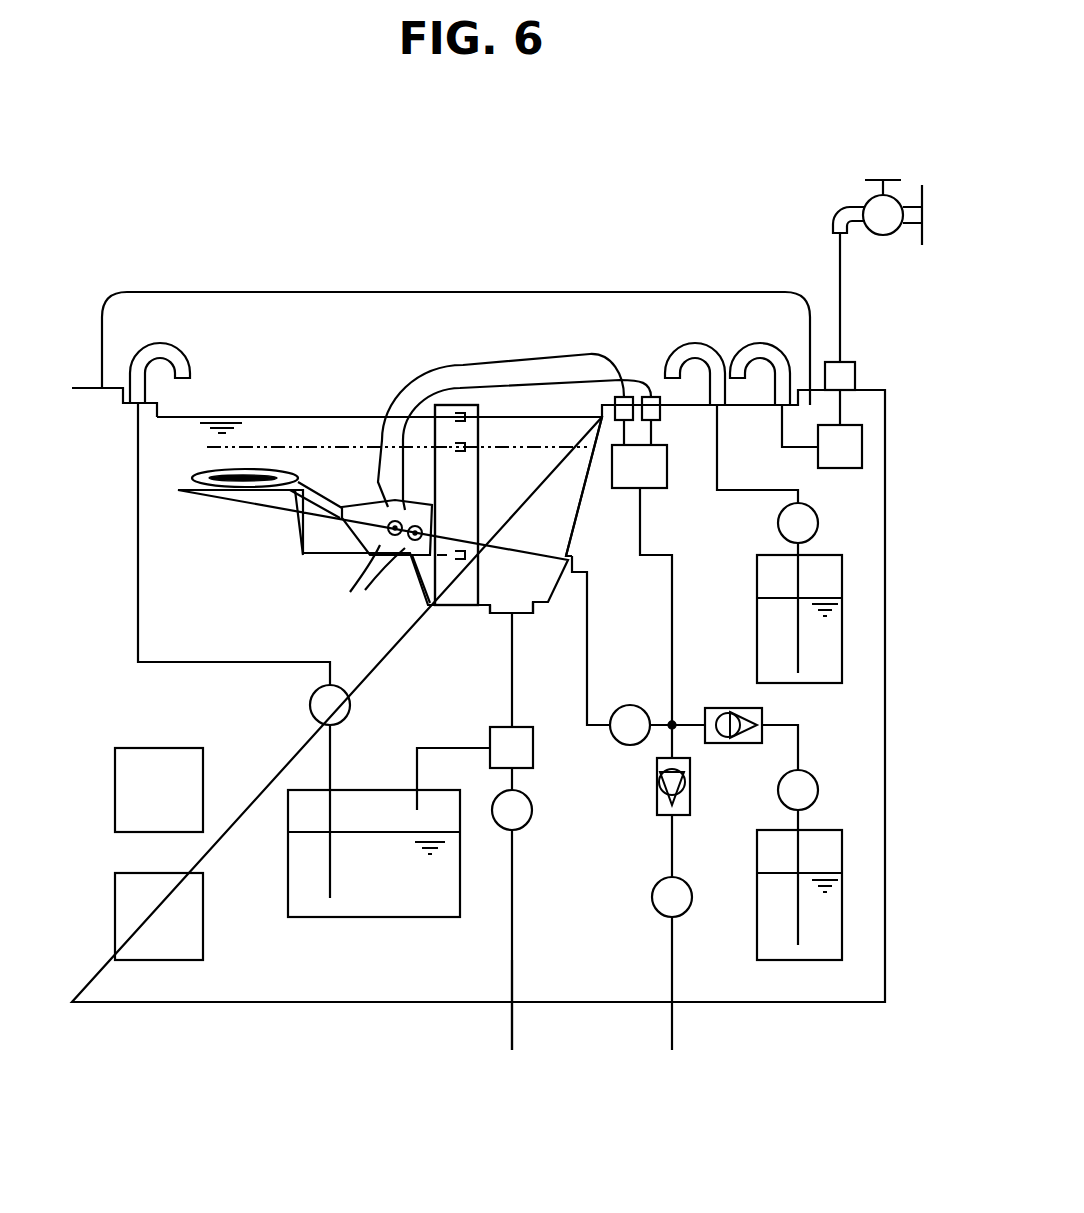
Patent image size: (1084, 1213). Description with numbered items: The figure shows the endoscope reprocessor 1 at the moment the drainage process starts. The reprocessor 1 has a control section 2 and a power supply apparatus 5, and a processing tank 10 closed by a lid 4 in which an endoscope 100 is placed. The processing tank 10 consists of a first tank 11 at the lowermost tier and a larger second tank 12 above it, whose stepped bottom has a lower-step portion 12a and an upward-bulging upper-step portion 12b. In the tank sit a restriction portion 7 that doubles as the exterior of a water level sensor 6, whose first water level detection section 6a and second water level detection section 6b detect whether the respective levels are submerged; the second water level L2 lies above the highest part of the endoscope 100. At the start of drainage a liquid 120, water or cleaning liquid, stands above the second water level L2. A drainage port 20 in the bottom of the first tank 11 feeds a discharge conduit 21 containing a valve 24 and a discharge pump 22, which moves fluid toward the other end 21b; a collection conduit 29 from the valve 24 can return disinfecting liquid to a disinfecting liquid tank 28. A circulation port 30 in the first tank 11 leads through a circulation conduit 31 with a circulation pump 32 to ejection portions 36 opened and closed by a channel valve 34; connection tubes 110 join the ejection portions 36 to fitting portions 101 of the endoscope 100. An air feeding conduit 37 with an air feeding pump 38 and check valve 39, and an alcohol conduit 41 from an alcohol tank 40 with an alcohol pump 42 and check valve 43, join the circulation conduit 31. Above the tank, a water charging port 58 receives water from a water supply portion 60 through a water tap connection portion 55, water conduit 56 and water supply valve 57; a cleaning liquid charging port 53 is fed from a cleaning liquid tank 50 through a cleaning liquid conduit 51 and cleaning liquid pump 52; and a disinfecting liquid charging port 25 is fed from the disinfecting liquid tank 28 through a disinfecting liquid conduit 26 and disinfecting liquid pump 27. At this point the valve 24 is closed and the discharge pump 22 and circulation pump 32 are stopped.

The endoscope reprocessor 1 is at (150, 213).
The control section 2 is at (115, 748).
The lid 4 is at (458, 291).
The power supply apparatus 5 is at (115, 873).
The water level sensor 6 is at (457, 404).
The restriction portion 7 is at (456, 505).
The first water level detection section 6a is at (462, 553).
The second water level detection section 6b is at (462, 450).
The processing tank 10 is at (347, 392).
The first tank 11 is at (420, 585).
The second tank 12 is at (261, 558).
The lower-step portion 12a is at (330, 556).
The upper-step portion 12b is at (244, 490).
The drainage port 20 is at (520, 612).
The discharge conduit 21 is at (511, 662).
The other end of discharge conduit 21b is at (513, 1027).
The discharge pump 22 is at (526, 826).
The valve 24 is at (490, 727).
The disinfecting liquid charging port 25 is at (152, 342).
The disinfecting liquid conduit 26 is at (200, 663).
The disinfecting liquid pump 27 is at (310, 705).
The disinfecting liquid tank 28 is at (288, 810).
The collection conduit 29 is at (417, 749).
The circulation port 30 is at (563, 557).
The circulation conduit 31 is at (588, 620).
The circulation pump 32 is at (630, 705).
The channel valve 34 is at (656, 488).
The ejection portions 36 is at (651, 395).
The air feeding conduit 37 is at (674, 856).
The air feeding pump 38 is at (687, 915).
The check valve 39 is at (690, 797).
The alcohol tank 40 is at (842, 882).
The alcohol conduit 41 is at (800, 730).
The alcohol pump 42 is at (820, 790).
The check valve 43 is at (735, 743).
The cleaning liquid tank 50 is at (842, 580).
The cleaning liquid conduit 51 is at (752, 492).
The cleaning liquid pump 52 is at (818, 516).
The cleaning liquid charging port 53 is at (666, 345).
The water tap connection portion 55 is at (852, 362).
The water conduit 56 is at (782, 432).
The water supply valve 57 is at (862, 440).
The water charging port 58 is at (752, 345).
The water supply portion 60 is at (846, 206).
The endoscope 100 is at (350, 504).
The fitting portions 101 is at (366, 576).
The connection tubes 110 is at (422, 401).
The liquid 120 is at (279, 416).
The second water level L2 is at (398, 437).